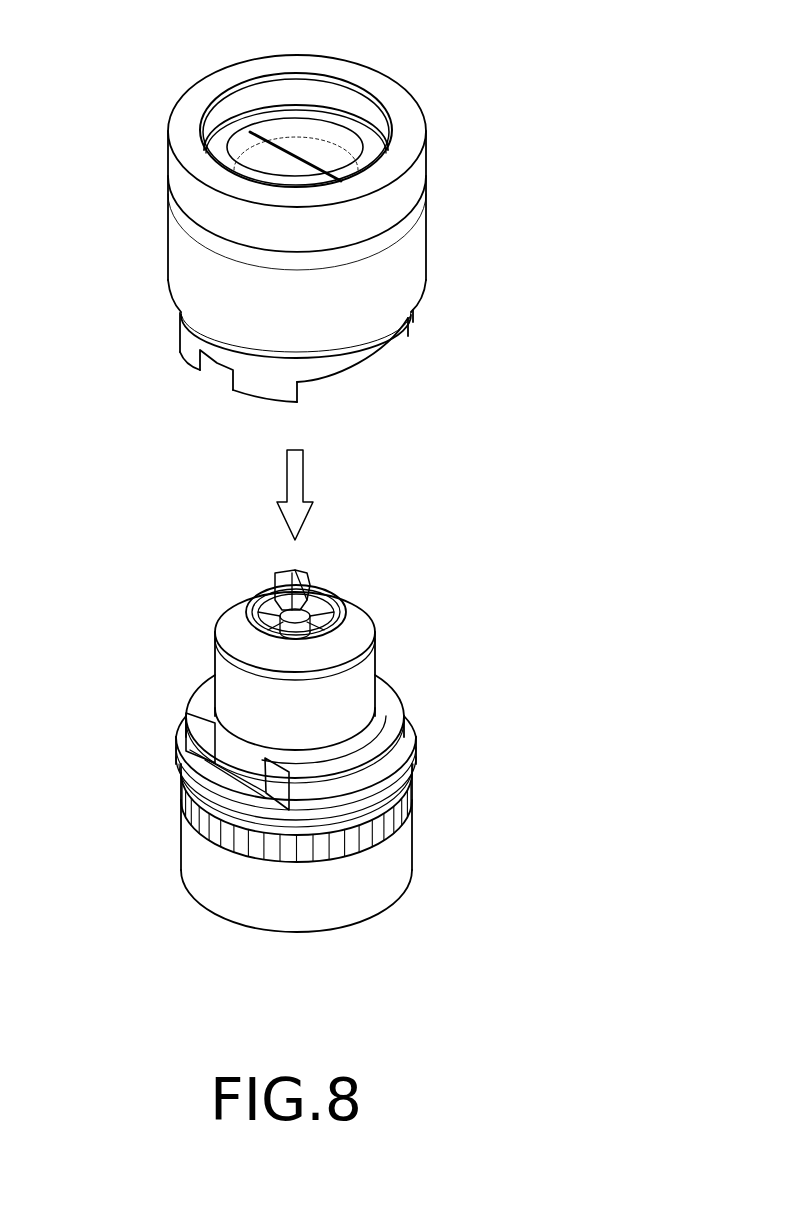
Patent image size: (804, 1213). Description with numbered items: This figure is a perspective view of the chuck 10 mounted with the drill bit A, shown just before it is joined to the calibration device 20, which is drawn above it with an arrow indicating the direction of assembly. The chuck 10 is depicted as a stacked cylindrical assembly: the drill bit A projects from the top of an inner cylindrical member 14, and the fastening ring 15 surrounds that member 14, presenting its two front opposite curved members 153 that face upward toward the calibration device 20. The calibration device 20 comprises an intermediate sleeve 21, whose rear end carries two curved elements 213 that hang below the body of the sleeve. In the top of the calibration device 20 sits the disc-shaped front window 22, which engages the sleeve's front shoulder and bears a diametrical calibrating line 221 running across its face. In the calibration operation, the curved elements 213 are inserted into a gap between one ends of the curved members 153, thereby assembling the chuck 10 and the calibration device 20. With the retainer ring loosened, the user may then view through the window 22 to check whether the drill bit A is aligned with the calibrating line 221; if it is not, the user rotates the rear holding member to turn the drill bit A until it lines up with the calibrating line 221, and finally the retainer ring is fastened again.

The chuck 10 is at (282, 729).
The valve core cylinder 14 is at (339, 638).
The fastening ring 15 is at (277, 751).
The curved members 153 is at (200, 730).
The calibration device 20 is at (335, 236).
The intermediate sleeve 21 is at (272, 387).
The curved elements 213 is at (248, 387).
The front window 22 is at (300, 132).
The calibrating line 221 is at (317, 160).
The drill bit A is at (312, 572).